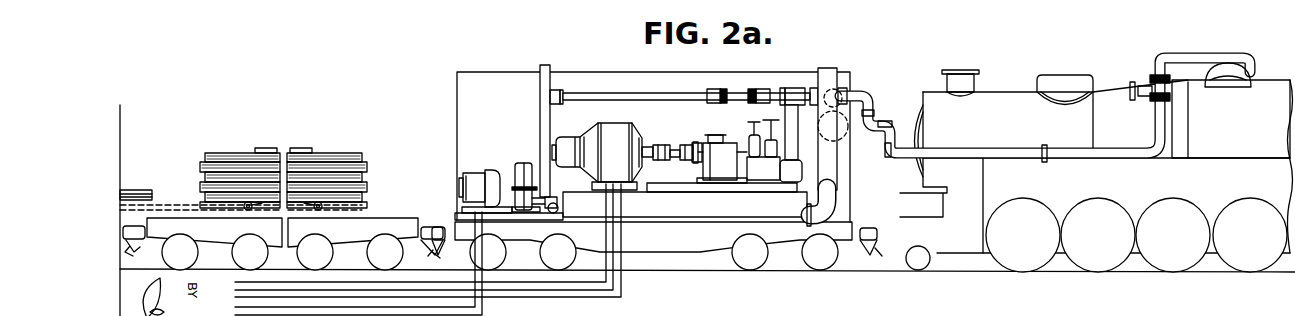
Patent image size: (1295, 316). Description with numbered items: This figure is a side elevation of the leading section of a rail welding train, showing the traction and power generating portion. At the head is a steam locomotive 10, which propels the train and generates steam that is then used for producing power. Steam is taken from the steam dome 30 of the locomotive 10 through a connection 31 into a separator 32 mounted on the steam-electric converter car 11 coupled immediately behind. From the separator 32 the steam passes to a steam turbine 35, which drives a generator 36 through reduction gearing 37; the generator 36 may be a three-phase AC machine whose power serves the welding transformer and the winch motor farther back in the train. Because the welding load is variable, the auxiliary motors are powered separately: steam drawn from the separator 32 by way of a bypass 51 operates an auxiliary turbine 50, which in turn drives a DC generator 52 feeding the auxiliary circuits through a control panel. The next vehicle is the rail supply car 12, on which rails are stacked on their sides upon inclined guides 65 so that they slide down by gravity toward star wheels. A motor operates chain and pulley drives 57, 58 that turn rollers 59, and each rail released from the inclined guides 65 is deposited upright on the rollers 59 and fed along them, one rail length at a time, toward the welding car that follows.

The locomotive 10 is at (1096, 171).
The steam-electric converter car 11 is at (688, 242).
The rail supply car 12 is at (395, 218).
The steam dome 30 is at (1252, 80).
The connection 31 is at (1207, 60).
The separator 32 is at (845, 141).
The steam turbine 35 is at (780, 133).
The generator 36 is at (612, 133).
The reduction gearing 37 is at (712, 170).
The auxiliary turbine 50 is at (521, 163).
The bypass 51 is at (688, 98).
The DC generator 52 is at (473, 177).
The chain and pulley drive 57 is at (173, 205).
The chain and pulley drive 58 is at (249, 210).
The rollers 59 is at (243, 205).
The inclined guides 65 is at (300, 148).